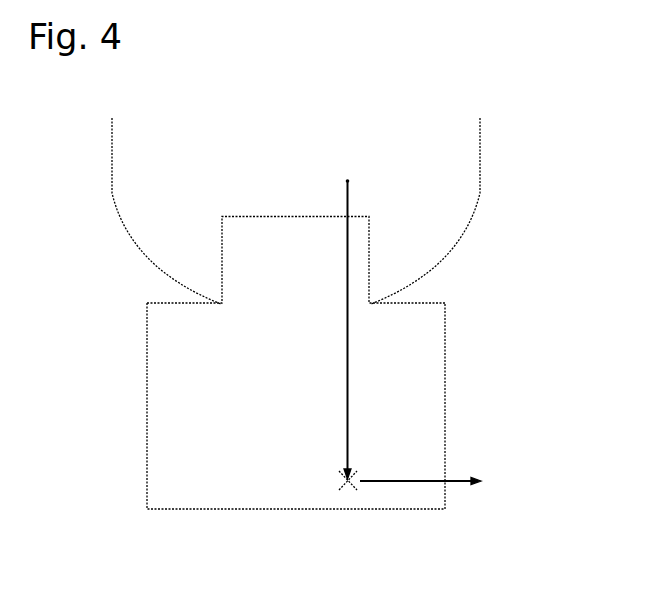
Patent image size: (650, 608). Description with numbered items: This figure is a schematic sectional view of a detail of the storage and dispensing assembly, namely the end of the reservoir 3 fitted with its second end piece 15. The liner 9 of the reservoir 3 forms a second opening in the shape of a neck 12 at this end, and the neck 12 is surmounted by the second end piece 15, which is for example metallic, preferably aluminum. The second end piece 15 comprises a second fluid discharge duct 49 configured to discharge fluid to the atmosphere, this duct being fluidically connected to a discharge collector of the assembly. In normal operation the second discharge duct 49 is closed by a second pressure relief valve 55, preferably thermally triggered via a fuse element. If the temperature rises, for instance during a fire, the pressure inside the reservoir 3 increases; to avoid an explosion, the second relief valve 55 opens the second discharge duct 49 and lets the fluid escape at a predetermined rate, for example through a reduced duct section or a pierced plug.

The reservoir 3 is at (77, 242).
The liner 9 is at (480, 165).
The neck 12 is at (410, 287).
The second end piece 15 is at (445, 350).
The second fluid discharge duct 49 is at (347, 369).
The second pressure relief valve 55 is at (358, 487).